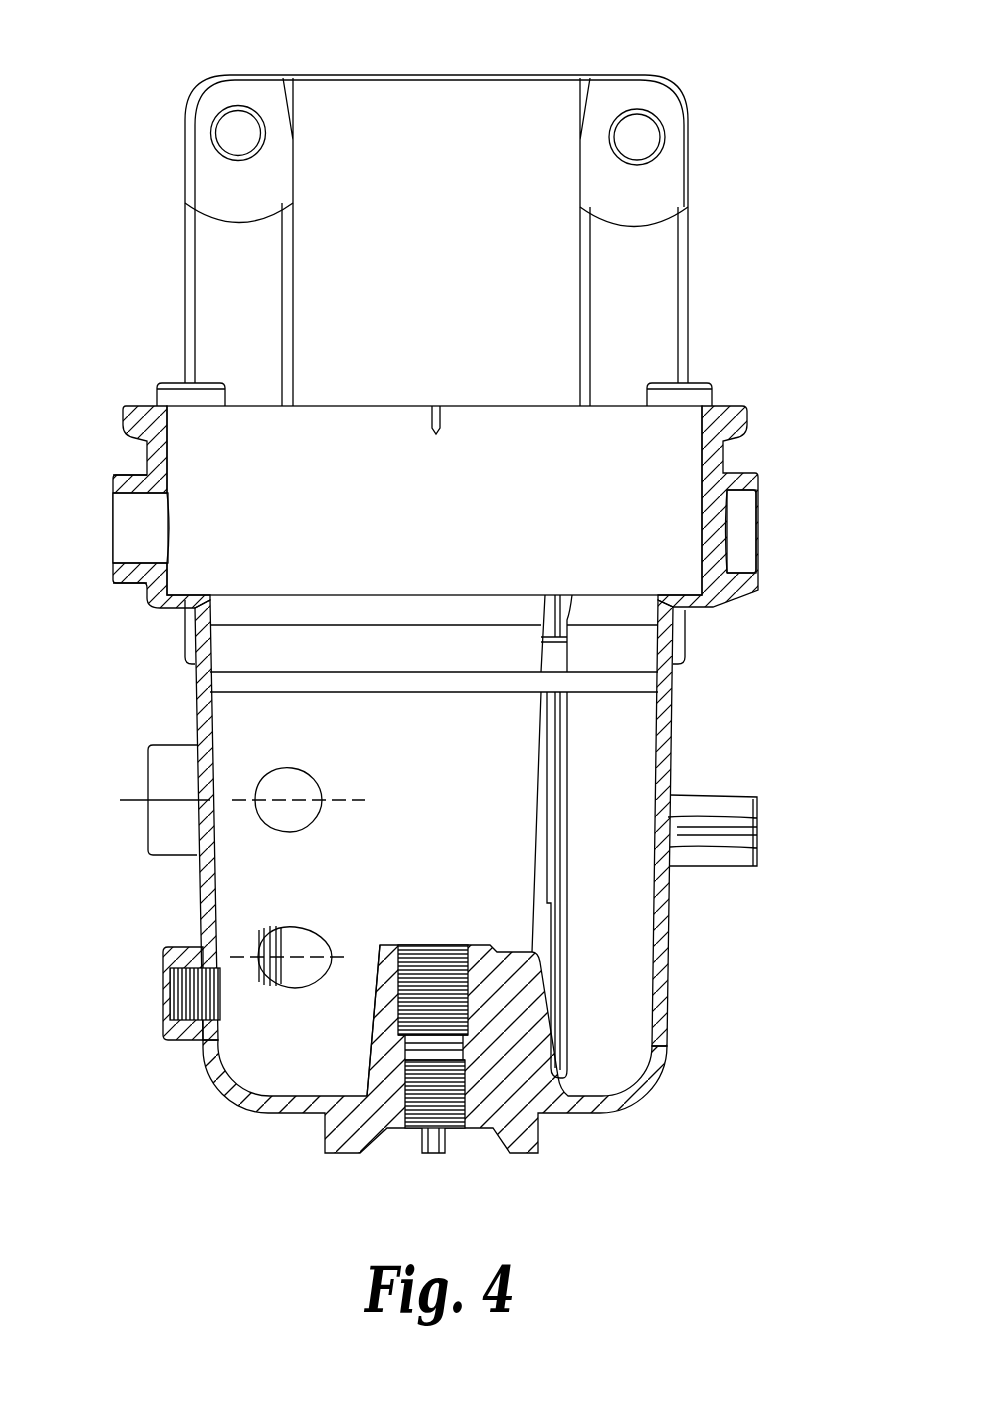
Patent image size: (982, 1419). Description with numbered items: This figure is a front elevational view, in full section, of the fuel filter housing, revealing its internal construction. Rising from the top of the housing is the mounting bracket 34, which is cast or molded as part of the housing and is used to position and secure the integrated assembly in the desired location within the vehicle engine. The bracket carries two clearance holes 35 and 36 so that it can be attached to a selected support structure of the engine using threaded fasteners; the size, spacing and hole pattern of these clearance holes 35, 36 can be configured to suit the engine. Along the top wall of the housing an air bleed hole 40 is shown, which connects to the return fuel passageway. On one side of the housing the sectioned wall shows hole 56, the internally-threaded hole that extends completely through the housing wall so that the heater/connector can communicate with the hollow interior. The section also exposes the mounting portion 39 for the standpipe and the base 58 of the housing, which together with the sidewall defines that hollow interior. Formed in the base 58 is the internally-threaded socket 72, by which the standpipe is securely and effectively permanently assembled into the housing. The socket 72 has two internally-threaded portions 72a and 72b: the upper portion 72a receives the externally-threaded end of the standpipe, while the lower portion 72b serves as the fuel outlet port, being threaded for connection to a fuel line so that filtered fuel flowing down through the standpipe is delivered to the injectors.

The mounting bracket 34 is at (498, 76).
The clearance hole 35 is at (238, 134).
The clearance hole 36 is at (642, 140).
The air bleed hole 40 is at (438, 407).
The hole 56 is at (132, 530).
The internally-threaded socket 72 is at (385, 1030).
The internally-threaded portion 72a is at (397, 972).
The internally-threaded portion 72b is at (402, 1110).
The mounting portion 39 is at (373, 1000).
The base 58 is at (532, 1106).